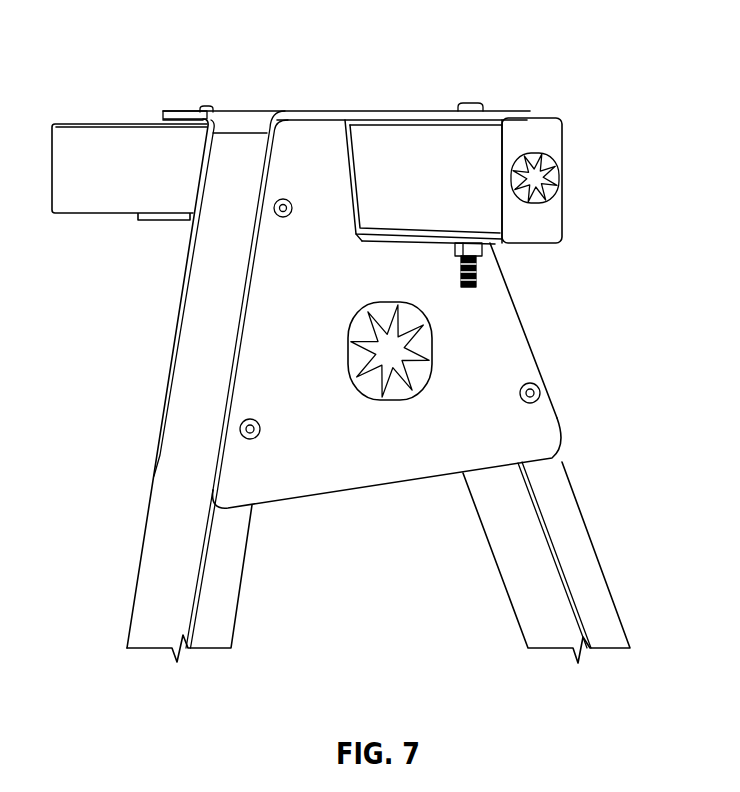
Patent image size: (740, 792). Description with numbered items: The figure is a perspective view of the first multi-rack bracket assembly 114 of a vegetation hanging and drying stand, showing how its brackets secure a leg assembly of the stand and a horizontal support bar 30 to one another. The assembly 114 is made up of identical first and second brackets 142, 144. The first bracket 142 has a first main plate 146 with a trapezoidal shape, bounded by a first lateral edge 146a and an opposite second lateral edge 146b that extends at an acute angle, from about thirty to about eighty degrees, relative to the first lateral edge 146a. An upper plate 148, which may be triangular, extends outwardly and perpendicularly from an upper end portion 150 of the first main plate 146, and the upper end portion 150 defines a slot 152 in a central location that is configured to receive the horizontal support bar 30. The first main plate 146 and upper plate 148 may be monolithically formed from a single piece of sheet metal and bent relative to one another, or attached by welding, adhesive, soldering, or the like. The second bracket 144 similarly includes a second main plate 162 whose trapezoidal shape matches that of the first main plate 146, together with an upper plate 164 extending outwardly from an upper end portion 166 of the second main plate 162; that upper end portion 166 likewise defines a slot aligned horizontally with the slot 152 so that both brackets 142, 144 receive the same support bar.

The horizontal support bar 30 is at (453, 150).
The first multi-rack bracket assembly 114 is at (586, 276).
The first bracket 142 is at (544, 338).
The second bracket 144 is at (166, 390).
The first main plate 146 is at (359, 319).
The first lateral edge 146a is at (222, 452).
The second lateral edge 146b is at (558, 417).
The upper plate 148 is at (335, 167).
The upper end portion 150 is at (297, 175).
The slot 152 is at (363, 243).
The second main plate 162 is at (158, 418).
The upper plate 164 is at (178, 115).
The upper end portion 166 is at (215, 120).